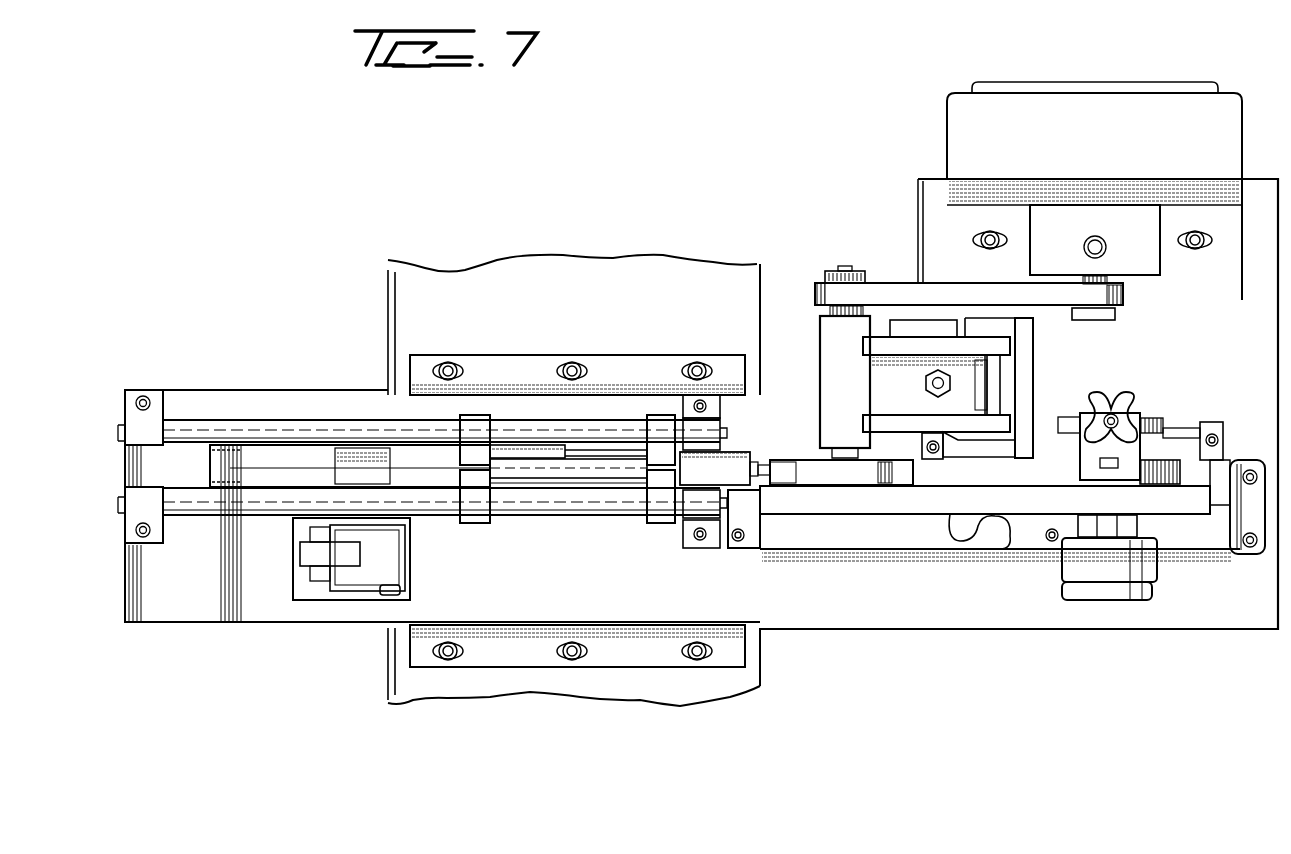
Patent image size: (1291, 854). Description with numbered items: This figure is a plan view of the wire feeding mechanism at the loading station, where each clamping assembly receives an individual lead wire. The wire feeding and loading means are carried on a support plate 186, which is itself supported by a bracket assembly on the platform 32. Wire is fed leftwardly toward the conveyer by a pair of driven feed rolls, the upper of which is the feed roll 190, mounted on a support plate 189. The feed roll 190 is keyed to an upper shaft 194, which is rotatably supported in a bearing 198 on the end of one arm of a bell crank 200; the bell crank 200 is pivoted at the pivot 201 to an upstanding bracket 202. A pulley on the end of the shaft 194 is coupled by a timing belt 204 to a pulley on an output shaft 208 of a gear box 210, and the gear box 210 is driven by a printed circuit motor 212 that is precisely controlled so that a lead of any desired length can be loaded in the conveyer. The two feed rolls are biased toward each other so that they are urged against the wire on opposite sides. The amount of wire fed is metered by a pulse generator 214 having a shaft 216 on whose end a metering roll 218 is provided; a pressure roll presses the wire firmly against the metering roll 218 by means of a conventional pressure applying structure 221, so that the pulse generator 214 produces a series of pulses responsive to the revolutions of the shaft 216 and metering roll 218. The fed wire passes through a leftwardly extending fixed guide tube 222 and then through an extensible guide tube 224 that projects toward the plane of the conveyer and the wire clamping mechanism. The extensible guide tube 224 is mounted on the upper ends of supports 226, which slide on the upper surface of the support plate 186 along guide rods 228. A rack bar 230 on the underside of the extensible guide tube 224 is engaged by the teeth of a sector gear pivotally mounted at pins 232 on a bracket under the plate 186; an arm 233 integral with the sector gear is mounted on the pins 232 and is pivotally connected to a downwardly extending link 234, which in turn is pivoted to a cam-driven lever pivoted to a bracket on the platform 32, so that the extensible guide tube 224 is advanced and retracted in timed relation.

The platform 32 is at (598, 268).
The support plate 186 is at (192, 612).
The support plate 189 is at (984, 511).
The feed roll 190 is at (858, 472).
The upper shaft 194 is at (850, 262).
The bearing 198 is at (840, 412).
The bell crank 200 is at (939, 389).
The pivot 201 is at (1000, 388).
The upstanding bracket 202 is at (995, 328).
The timing belt 204 is at (955, 300).
The output shaft 208 is at (1097, 278).
The gear box 210 is at (1095, 240).
The printed circuit motor 212 is at (1232, 112).
The pulse generator 214 is at (1150, 568).
The shaft 216 is at (1120, 522).
The metering roll 218 is at (1148, 482).
The pressure applying structure 221 is at (1137, 418).
The fixed guide tube 222 is at (762, 463).
The extensible guide tube 224 is at (598, 475).
The supports 226 is at (470, 430).
The guide rods 228 is at (300, 425).
The rack bar 230 is at (535, 455).
The pivot pins 232 is at (395, 592).
The arm 233 is at (385, 550).
The link 234 is at (310, 552).